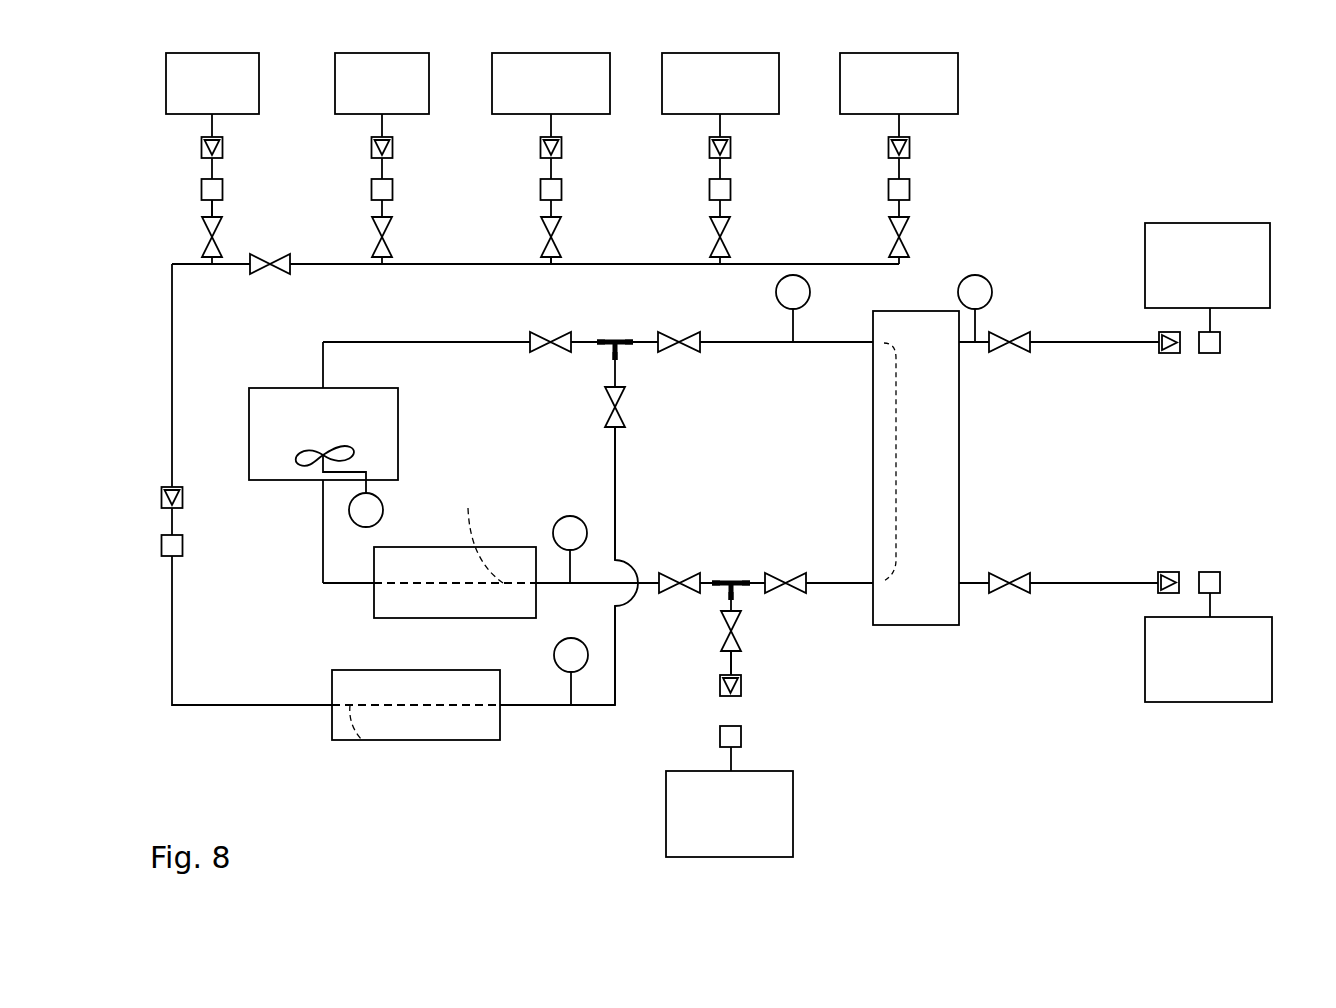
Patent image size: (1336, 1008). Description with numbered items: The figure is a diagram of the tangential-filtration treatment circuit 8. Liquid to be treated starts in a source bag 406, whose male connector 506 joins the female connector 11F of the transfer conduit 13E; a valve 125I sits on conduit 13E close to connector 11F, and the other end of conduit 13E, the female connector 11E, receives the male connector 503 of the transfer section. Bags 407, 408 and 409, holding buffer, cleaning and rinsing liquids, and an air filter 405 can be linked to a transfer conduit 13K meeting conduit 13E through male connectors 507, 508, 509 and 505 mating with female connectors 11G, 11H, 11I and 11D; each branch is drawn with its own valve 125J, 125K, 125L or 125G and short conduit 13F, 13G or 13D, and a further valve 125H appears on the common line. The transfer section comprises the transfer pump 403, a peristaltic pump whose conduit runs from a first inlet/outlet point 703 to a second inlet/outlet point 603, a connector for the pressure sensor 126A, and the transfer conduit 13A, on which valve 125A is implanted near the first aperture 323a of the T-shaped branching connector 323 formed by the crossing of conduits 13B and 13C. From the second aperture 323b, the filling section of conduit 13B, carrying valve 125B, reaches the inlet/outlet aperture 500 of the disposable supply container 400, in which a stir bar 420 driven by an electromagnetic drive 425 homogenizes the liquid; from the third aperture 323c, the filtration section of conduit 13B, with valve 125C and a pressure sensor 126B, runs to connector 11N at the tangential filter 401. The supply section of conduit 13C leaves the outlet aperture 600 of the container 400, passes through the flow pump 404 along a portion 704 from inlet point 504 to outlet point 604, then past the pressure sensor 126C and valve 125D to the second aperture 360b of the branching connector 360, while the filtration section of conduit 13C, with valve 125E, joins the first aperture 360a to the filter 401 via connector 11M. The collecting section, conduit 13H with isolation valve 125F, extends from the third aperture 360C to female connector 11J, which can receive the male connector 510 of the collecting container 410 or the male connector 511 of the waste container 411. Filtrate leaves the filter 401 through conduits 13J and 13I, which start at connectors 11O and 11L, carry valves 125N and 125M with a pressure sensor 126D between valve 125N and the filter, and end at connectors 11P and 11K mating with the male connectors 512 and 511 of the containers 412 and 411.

The circuit 8 is at (1114, 160).
The source bag 406 is at (166, 83).
The bag 407 is at (335, 103).
The bag 408 is at (492, 104).
The bag 409 is at (662, 104).
The filter 405 is at (840, 104).
The male connector 506 is at (201, 146).
The male connector 507 is at (371, 146).
The male connector 508 is at (540, 146).
The male connector 509 is at (709, 146).
The male connector 505 is at (888, 146).
The female connector 11F is at (201, 190).
The female connector 11G is at (371, 190).
The female connector 11H is at (540, 190).
The female connector 11I is at (709, 190).
The female connector 11D is at (888, 190).
The female connector 11E is at (161, 497).
The connector 11N is at (870, 342).
The connector 11O is at (965, 345).
The connector 11P is at (1168, 353).
The connector 11M is at (870, 583).
The connector 11L is at (965, 582).
The connector 11K is at (1168, 572).
The female connector 11J is at (742, 690).
The valve 125I is at (205, 240).
The valve 125J is at (376, 228).
The valve 125K is at (545, 228).
The valve 125L is at (714, 228).
The valve 125G is at (893, 228).
The valve 125H is at (272, 274).
The valve 125A is at (625, 403).
The valve 125B is at (553, 353).
The valve 125C is at (690, 353).
The valve 125D is at (668, 573).
The valve 125E is at (790, 573).
The isolation valve 125F is at (725, 645).
The valve 125M is at (1015, 595).
The valve 125N is at (1000, 333).
The transfer conduit 13A is at (615, 478).
The conduit 13B is at (385, 342).
The conduit 13C is at (608, 583).
The line 13D is at (718, 262).
The transfer conduit 13E is at (212, 212).
The line 13F is at (380, 262).
The line 13G is at (549, 262).
The conduit 13H is at (735, 665).
The conduit 13I is at (1075, 583).
The conduit 13J is at (1075, 342).
The transfer conduit 13K is at (172, 385).
The pressure sensor 126A is at (554, 656).
The pressure sensor 126B is at (800, 312).
The pressure sensor 126C is at (570, 515).
The pressure sensor 126D is at (975, 275).
The T-shaped branching connector 323 is at (615, 342).
The first aperture 323a is at (613, 368).
The second aperture 323b is at (600, 340).
The third aperture 323c is at (628, 342).
The T-shaped branching connector 360 is at (728, 580).
The first aperture 360a is at (745, 580).
The second aperture 360b is at (728, 580).
The third aperture 360C is at (738, 598).
The supply container 400 is at (398, 455).
The stir bar 420 is at (355, 462).
The electromagnetic drive 425 is at (383, 510).
The inlet/outlet aperture 500 is at (323, 380).
The outlet aperture 600 is at (323, 492).
The flow pump 404 is at (536, 555).
The portion 704 is at (477, 534).
The inlet point 504 is at (374, 590).
The outlet point 604 is at (540, 585).
The transfer pump 403 is at (488, 740).
The first point of inlet/outlet 703 is at (363, 740).
The second point of inlet/outlet 603 is at (500, 705).
The tangential filter 401 is at (960, 512).
The collecting container 410 is at (793, 850).
The male connector 510 is at (742, 737).
The waste container 411 is at (1260, 690).
The male connector 511 is at (1220, 583).
The collecting container 412 is at (1272, 258).
The male connector 512 is at (1221, 343).
The male connector 503 is at (161, 545).